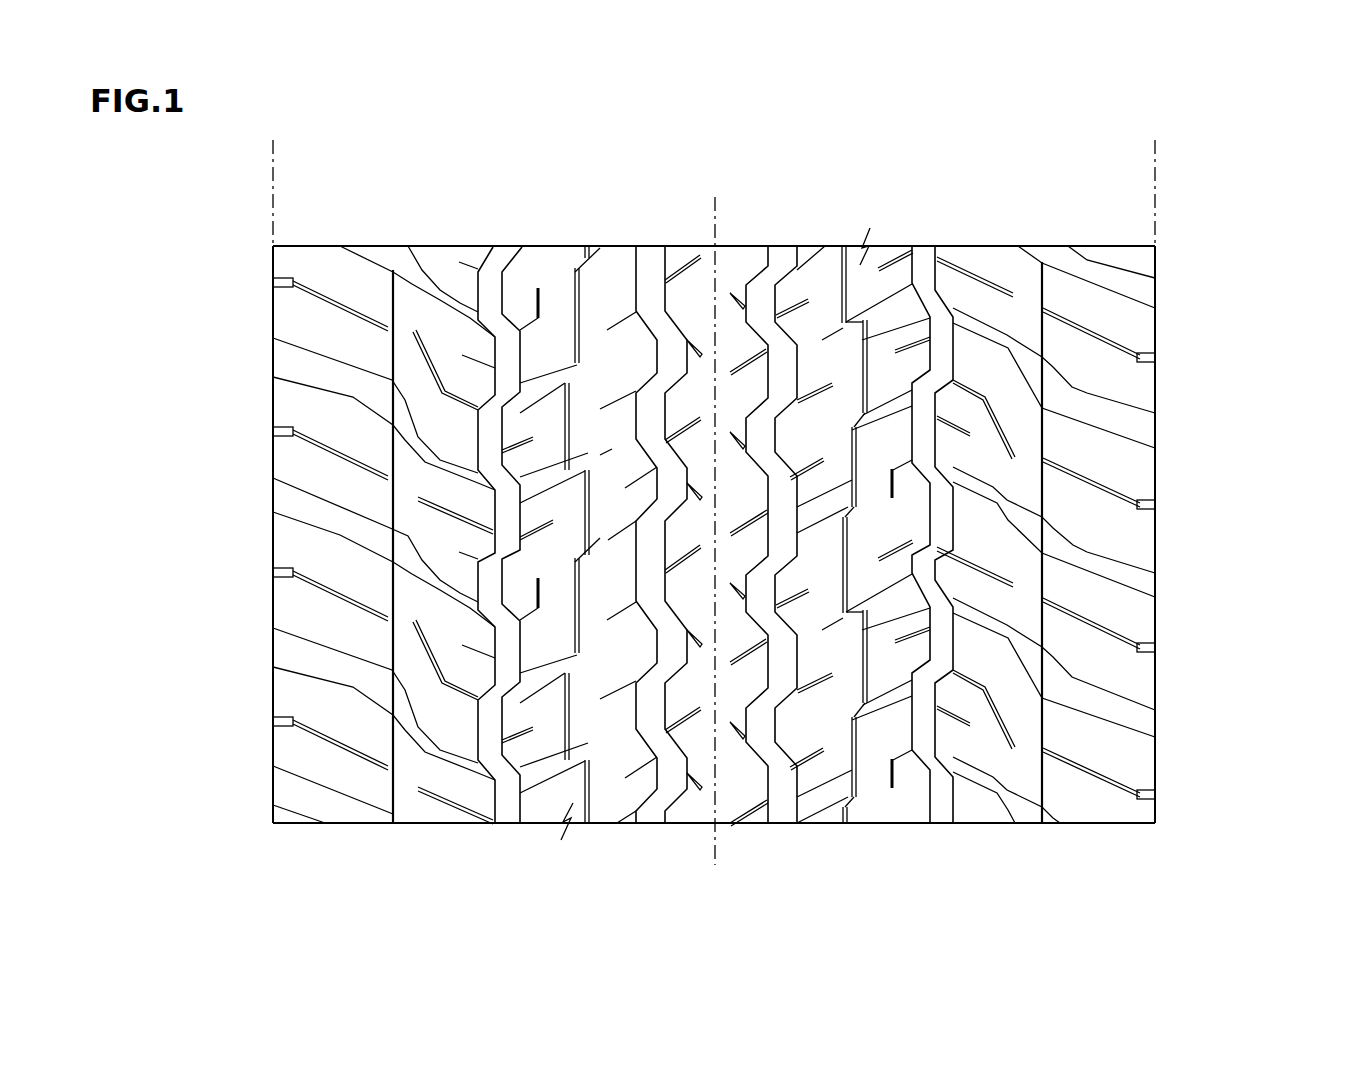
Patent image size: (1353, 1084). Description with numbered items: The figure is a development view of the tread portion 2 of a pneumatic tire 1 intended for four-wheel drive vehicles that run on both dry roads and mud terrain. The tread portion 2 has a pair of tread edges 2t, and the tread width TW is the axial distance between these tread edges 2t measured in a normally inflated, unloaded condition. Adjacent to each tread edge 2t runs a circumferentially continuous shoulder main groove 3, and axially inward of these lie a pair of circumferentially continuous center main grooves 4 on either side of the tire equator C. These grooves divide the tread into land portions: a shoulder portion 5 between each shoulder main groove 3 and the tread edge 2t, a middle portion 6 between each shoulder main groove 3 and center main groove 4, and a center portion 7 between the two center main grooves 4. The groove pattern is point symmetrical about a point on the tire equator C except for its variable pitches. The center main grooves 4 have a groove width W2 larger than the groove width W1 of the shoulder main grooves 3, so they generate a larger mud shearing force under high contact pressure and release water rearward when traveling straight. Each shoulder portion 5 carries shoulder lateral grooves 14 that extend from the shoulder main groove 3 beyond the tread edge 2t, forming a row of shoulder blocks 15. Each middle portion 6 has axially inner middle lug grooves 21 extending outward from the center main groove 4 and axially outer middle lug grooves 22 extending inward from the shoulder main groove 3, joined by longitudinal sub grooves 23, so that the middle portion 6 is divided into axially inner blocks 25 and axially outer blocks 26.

The pneumatic tire 1 is at (1064, 208).
The tread portion 2 is at (986, 259).
The tread edge 2t is at (273, 304).
The shoulder main groove 3 is at (498, 263).
The center main groove 4 is at (650, 270).
The shoulder portion 5 is at (407, 803).
The middle portion 6 is at (575, 802).
The center portion 7 is at (725, 802).
The shoulder lateral groove 14 is at (319, 657).
The shoulder block 15 is at (328, 703).
The axially inner middle lug groove 21 is at (611, 538).
The axially outer middle lug groove 22 is at (541, 374).
The longitudinal sub groove 23 is at (574, 323).
The axially inner block 25 is at (815, 414).
The axially outer block 26 is at (893, 525).
The tread width TW is at (1153, 150).
The tire equator C is at (716, 519).
The groove width of shoulder main groove W1 is at (900, 786).
The groove width of center main groove W2 is at (735, 786).